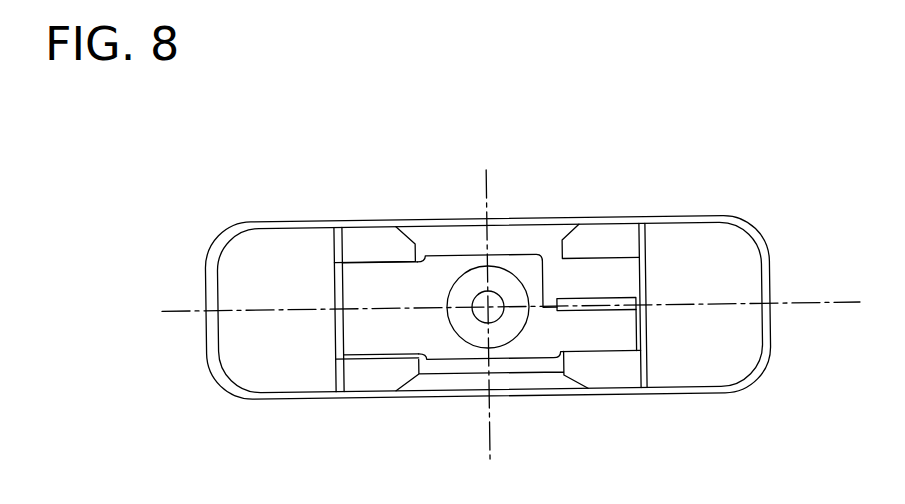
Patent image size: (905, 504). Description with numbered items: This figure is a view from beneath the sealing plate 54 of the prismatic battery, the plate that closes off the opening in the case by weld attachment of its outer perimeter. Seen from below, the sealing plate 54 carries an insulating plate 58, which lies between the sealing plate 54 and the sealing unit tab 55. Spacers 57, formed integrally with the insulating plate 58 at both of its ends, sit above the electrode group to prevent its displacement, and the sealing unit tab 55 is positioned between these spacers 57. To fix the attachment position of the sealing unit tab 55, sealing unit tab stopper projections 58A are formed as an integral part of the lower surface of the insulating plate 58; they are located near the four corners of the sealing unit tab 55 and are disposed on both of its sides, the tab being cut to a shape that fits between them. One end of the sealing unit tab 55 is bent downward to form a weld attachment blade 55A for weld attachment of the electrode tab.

The sealing plate 54 is at (234, 233).
The sealing unit tab 55 is at (387, 337).
The weld attachment blade 55A is at (609, 283).
The spacers 57 is at (291, 374).
The insulating plate 58 is at (524, 252).
The sealing unit tab stopper projections 58A is at (373, 246).